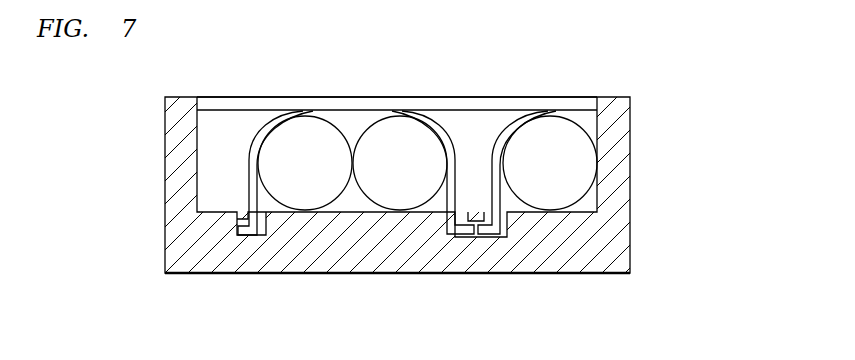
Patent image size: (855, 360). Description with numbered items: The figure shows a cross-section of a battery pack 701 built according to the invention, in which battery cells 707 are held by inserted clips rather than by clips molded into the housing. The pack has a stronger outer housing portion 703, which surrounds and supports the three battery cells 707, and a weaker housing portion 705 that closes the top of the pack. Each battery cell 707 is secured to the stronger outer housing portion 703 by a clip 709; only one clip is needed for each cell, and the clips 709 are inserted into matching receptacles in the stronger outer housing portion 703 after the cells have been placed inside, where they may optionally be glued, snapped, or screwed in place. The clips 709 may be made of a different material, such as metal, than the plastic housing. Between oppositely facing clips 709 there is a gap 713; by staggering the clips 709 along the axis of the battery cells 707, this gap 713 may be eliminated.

The battery pack 701 is at (97, 190).
The stronger outer housing portion 703 is at (632, 155).
The weaker housing portion 705 is at (218, 97).
The battery cells 707 is at (303, 207).
The clips 709 is at (307, 110).
The gap 713 is at (475, 120).